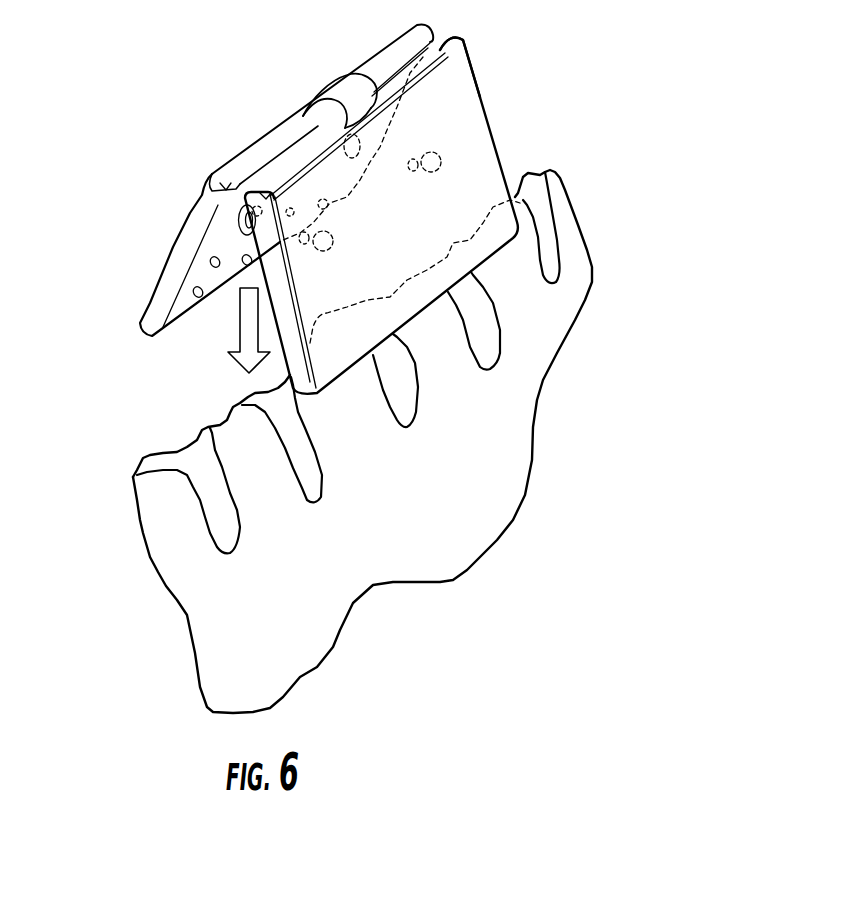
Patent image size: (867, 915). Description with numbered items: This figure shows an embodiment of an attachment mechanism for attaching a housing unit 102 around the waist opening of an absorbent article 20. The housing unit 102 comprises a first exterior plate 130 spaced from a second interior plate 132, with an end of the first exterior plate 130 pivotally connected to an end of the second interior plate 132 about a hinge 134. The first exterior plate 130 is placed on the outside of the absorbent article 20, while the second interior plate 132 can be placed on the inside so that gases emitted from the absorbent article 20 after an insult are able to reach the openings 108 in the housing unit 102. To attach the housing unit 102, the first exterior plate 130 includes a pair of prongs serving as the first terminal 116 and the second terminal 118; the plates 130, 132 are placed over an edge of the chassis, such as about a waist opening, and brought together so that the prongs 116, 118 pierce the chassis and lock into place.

The absorbent article 20 is at (151, 557).
The housing unit 102 is at (445, 96).
The openings 108 is at (212, 256).
The first terminal 116 is at (326, 234).
The second terminal 118 is at (438, 150).
The first exterior plate 130 is at (455, 38).
The second interior plate 132 is at (275, 147).
The hinge 134 is at (345, 97).